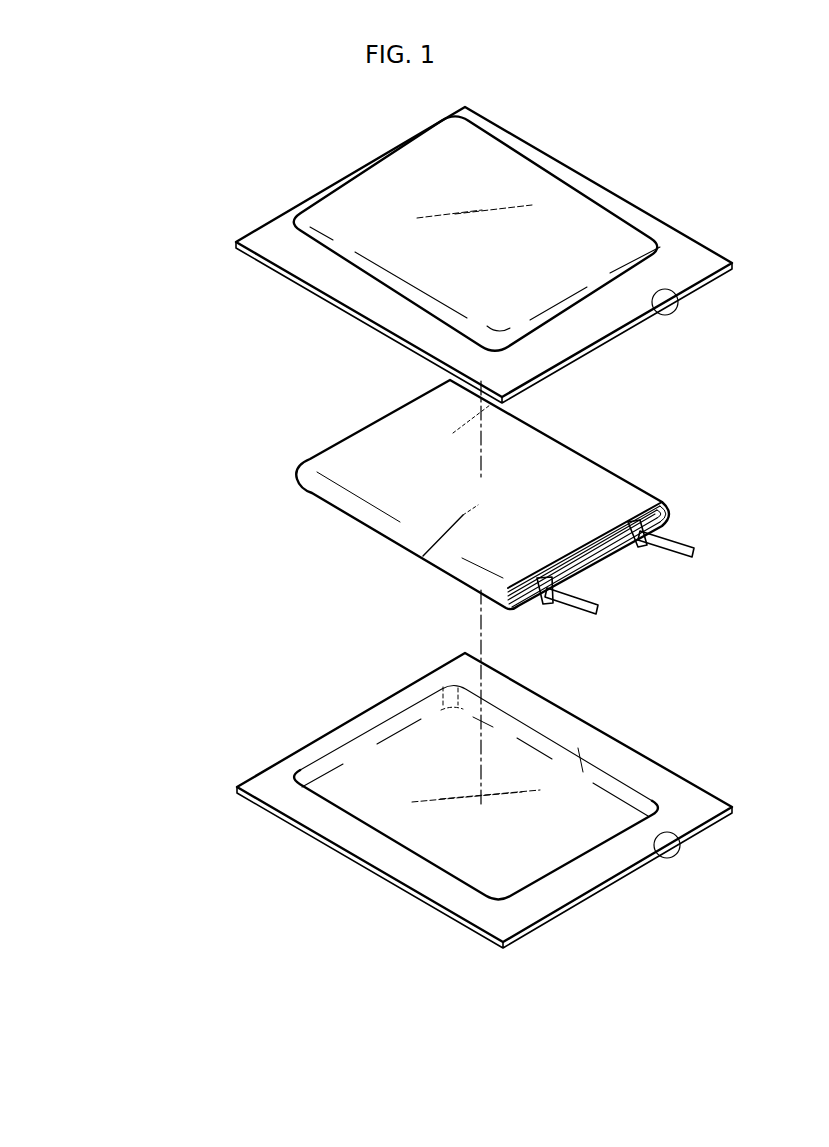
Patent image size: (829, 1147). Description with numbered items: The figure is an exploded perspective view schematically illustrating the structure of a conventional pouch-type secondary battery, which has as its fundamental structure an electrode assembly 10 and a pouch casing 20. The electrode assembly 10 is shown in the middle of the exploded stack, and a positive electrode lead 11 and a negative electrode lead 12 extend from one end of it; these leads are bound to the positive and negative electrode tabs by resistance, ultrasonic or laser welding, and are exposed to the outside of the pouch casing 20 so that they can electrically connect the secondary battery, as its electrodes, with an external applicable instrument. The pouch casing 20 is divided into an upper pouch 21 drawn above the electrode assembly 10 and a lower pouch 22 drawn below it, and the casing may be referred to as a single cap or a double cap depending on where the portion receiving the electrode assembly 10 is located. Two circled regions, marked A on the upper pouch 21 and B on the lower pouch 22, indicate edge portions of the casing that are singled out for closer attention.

The electrode assembly 10 is at (592, 448).
The positive electrode lead 11 is at (688, 545).
The negative electrode lead 12 is at (592, 600).
The pouch casing 20 is at (112, 437).
The upper pouch 21 is at (258, 258).
The lower pouch 22 is at (247, 784).
The detail region A is at (672, 314).
The detail region B is at (673, 857).